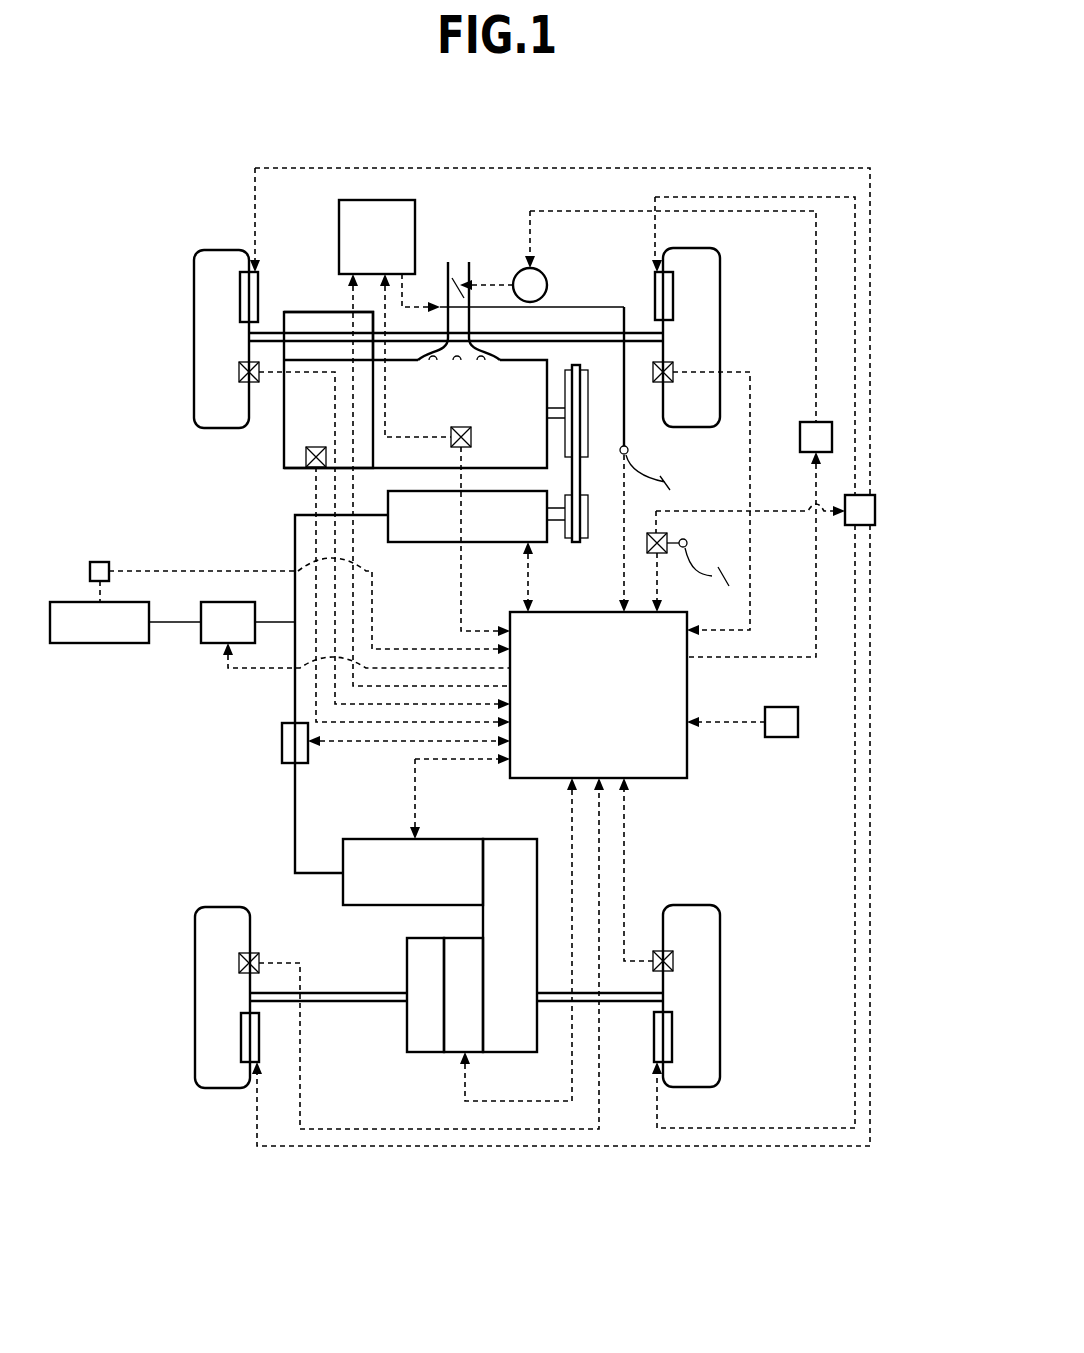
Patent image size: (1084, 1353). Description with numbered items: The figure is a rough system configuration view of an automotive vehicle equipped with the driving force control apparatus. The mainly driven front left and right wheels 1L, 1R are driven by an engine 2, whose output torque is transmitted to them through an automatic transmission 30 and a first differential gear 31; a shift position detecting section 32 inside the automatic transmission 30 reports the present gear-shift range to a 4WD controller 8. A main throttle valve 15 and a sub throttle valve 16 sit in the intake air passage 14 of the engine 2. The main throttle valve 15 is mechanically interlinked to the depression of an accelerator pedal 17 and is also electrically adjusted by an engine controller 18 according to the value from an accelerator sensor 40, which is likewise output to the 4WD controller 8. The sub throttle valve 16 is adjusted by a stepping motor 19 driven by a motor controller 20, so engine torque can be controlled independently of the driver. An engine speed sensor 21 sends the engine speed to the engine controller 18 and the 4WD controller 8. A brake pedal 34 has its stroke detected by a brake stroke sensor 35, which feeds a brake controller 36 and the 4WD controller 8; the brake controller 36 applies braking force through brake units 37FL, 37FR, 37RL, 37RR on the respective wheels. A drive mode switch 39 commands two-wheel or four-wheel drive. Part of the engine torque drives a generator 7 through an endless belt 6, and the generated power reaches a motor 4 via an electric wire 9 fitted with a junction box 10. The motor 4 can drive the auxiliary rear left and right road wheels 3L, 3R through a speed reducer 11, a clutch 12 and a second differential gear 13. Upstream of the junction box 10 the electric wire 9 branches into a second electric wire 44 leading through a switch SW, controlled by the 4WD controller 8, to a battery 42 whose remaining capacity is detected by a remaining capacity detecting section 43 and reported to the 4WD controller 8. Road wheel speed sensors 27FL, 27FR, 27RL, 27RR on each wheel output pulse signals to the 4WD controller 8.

The front left wheel 1L is at (194, 300).
The front right wheel 1R is at (720, 300).
The engine 2 is at (398, 456).
The rear left road wheel 3L is at (195, 935).
The rear right road wheel 3R is at (720, 932).
The motor 4 is at (372, 893).
The endless belt 6 is at (582, 472).
The generator 7 is at (430, 542).
The 4WD controller 8 is at (672, 757).
The electric wire 9 is at (295, 546).
The junction box 10 is at (282, 742).
The speed reducer 11 is at (510, 1045).
The clutch 12 is at (457, 1043).
The second differential gear 13 is at (423, 1043).
The intake air passage 14 is at (448, 270).
The main throttle valve 15 is at (462, 310).
The sub throttle valve 16 is at (458, 280).
The accelerator pedal 17 is at (672, 482).
The engine controller 18 is at (376, 200).
The stepping motor 19 is at (550, 285).
The motor controller 20 is at (832, 437).
The engine speed sensor 21 is at (472, 437).
The road wheel speed sensor 27FL is at (239, 372).
The road wheel speed sensor 27FR is at (673, 372).
The road wheel speed sensor 27RL is at (239, 962).
The road wheel speed sensor 27RR is at (673, 961).
The automatic transmission 30 is at (298, 423).
The first differential gear 31 is at (290, 312).
The shift position detecting section 32 is at (306, 468).
The brake pedal 34 is at (706, 570).
The brake stroke sensor 35 is at (662, 553).
The brake controller 36 is at (875, 510).
The brake unit 37FL is at (240, 290).
The brake unit 37FR is at (673, 292).
The brake unit 37RL is at (241, 1035).
The brake unit 37RR is at (672, 1035).
The drive mode switch 39 is at (780, 737).
The accelerator sensor 40 is at (630, 450).
The battery 42 is at (100, 643).
The remaining capacity detecting section 43 is at (100, 562).
The second electric wire 44 is at (178, 625).